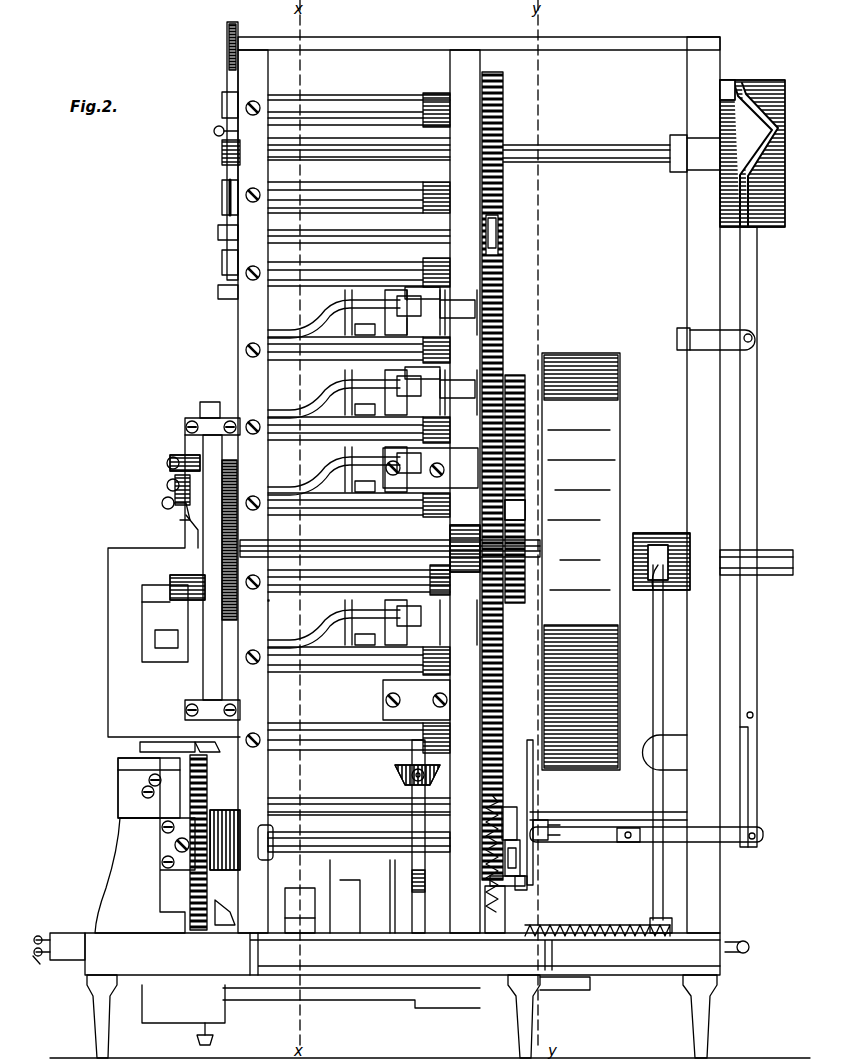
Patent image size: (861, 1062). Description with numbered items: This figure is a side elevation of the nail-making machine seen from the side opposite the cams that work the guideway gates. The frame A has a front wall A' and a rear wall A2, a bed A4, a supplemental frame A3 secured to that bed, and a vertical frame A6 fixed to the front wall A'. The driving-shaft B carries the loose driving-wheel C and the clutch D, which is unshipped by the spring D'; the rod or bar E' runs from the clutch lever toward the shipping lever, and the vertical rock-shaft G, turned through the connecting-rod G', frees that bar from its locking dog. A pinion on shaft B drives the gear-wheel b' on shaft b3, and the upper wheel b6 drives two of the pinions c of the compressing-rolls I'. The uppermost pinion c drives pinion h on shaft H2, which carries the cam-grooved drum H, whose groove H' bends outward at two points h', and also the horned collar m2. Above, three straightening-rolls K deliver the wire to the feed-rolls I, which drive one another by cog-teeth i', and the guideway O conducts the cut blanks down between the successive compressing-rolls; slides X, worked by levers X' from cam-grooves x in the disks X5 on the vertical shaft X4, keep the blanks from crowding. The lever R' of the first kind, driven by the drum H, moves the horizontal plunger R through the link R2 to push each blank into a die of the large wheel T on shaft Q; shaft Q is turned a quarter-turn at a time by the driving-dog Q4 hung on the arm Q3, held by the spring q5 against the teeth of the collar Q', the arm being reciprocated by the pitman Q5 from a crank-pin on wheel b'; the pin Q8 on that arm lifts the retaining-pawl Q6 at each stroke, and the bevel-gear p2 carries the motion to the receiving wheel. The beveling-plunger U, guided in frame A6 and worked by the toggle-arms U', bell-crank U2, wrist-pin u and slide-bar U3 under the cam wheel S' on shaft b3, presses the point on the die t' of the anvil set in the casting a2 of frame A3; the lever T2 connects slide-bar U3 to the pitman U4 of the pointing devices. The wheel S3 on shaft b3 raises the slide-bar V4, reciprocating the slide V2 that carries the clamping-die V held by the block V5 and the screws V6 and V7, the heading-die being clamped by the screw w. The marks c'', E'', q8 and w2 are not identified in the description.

The frame A is at (479, 33).
The front wall A' is at (251, 491).
The rear wall A2 is at (465, 491).
The supplement frame A3 is at (145, 875).
The bed A4 is at (430, 995).
The vertical frame A6 is at (108, 684).
The straightening-rolls K is at (228, 48).
The feed-rolls I is at (217, 105).
The compressing-rolls I' is at (219, 197).
The collar m2 is at (222, 150).
The guideway O is at (226, 300).
The pinions of the compressing-rolls c is at (498, 476).
The upper wheel b6 is at (516, 378).
The gear-wheel b' is at (539, 515).
The shaft b3 is at (322, 540).
The cog-teeth i' is at (391, 100).
The pinion h is at (397, 139).
The shaft H2 is at (611, 150).
The drum H is at (752, 142).
The cam-groove H' is at (733, 74).
The outward bends of cam-groove h' is at (770, 155).
The slides X is at (372, 445).
The vertical shaft X4 is at (420, 301).
The vertical rock-shaft G is at (372, 394).
The horizontal wheels or disks X5 is at (420, 381).
The levers X' is at (344, 471).
The cam-grooved wheel S3 is at (430, 468).
The connecting-rod or pitman Q5 is at (520, 786).
The shaft Q is at (354, 845).
The cam-groove x is at (392, 775).
The pivot c'' is at (428, 768).
The slide-bar V4 is at (411, 868).
The clamping-die V is at (300, 910).
The block V5 is at (351, 1002).
The screw V6 is at (42, 920).
The screw V7 is at (35, 969).
The slide V2 is at (59, 946).
The driving-wheel C is at (616, 500).
The clutch D is at (661, 553).
The spring D' is at (597, 917).
The driving-shaft B is at (756, 554).
The vertical lever R' is at (727, 537).
The horizontal plunger R is at (646, 845).
The connecting-link R2 is at (641, 836).
The rod or bar E' is at (665, 742).
The foot E'' is at (668, 915).
The connecting-rod G' is at (608, 806).
The fast collar or drum Q' is at (517, 812).
The retaining-pawl Q6 is at (492, 800).
The pin q8 is at (489, 870).
The rigid pin Q8 is at (498, 909).
The driving-dog Q4 is at (520, 862).
The retracting-spring q5 is at (545, 845).
The radial arm Q3 is at (521, 890).
The wrist-pin u is at (196, 590).
The screw w is at (222, 500).
The lever T2 is at (168, 470).
The pitman U4 is at (166, 508).
The cam-grooved wheel S' is at (168, 531).
The bell-crank lever U2 is at (168, 580).
The toggle-arms U' is at (131, 623).
The slide-bar U3 is at (210, 665).
The beveling-plunger U is at (159, 750).
The beveling-die t' is at (131, 788).
The raised block or casting a2 is at (139, 788).
The large wheel T is at (198, 842).
The bevel-gear wheel p2 is at (222, 815).
The pawl w2 is at (225, 904).